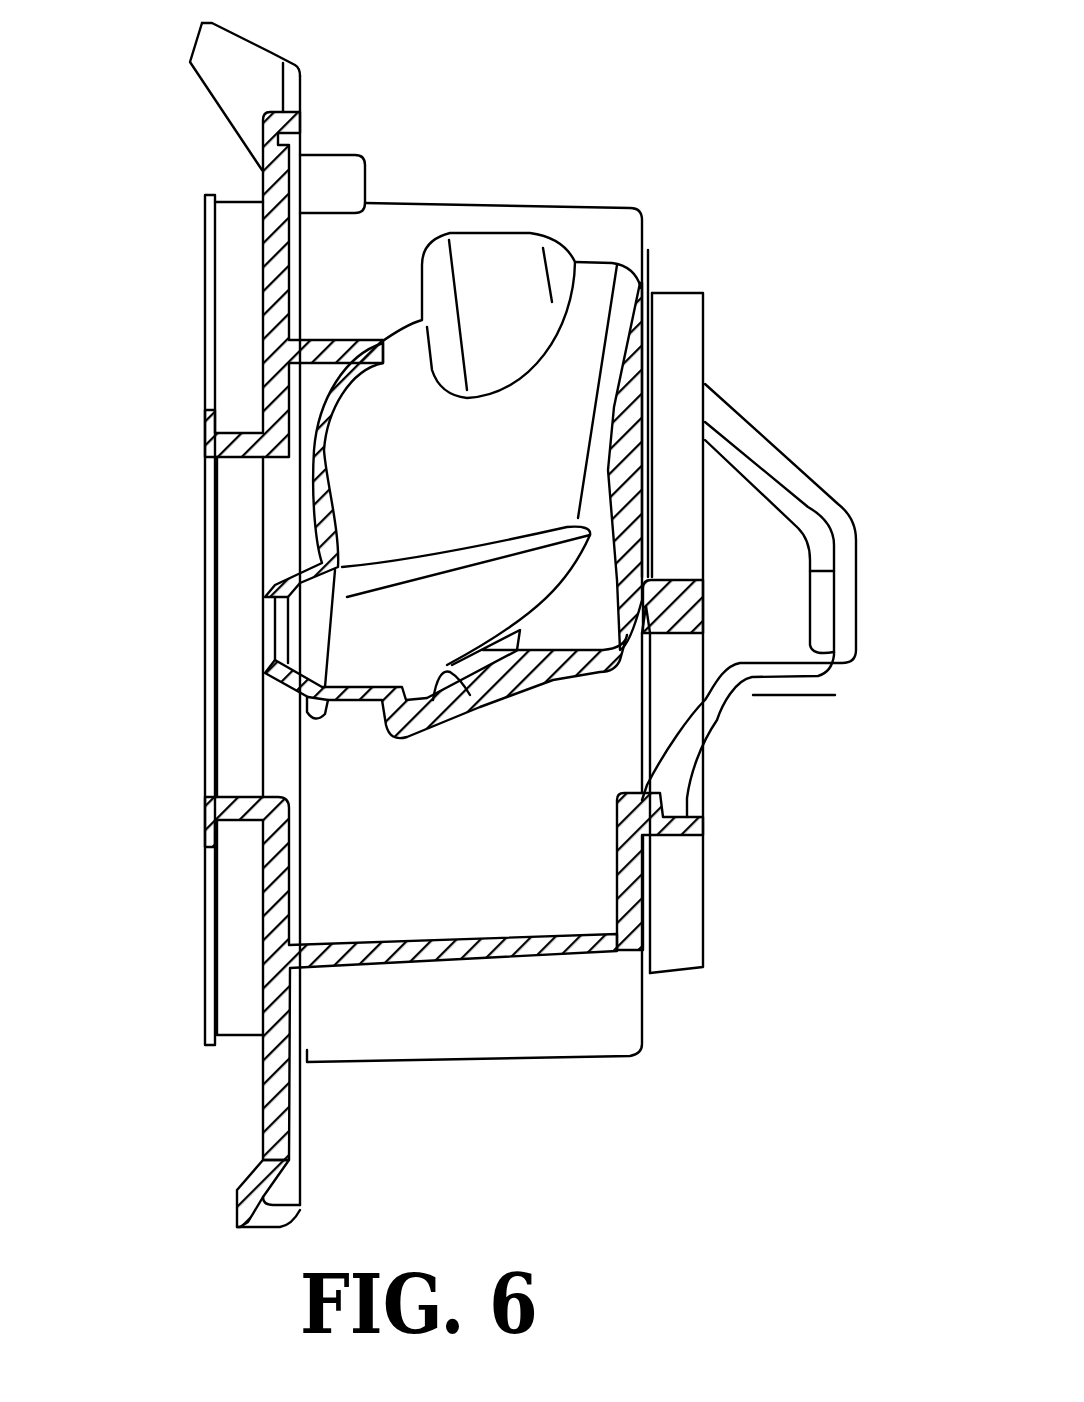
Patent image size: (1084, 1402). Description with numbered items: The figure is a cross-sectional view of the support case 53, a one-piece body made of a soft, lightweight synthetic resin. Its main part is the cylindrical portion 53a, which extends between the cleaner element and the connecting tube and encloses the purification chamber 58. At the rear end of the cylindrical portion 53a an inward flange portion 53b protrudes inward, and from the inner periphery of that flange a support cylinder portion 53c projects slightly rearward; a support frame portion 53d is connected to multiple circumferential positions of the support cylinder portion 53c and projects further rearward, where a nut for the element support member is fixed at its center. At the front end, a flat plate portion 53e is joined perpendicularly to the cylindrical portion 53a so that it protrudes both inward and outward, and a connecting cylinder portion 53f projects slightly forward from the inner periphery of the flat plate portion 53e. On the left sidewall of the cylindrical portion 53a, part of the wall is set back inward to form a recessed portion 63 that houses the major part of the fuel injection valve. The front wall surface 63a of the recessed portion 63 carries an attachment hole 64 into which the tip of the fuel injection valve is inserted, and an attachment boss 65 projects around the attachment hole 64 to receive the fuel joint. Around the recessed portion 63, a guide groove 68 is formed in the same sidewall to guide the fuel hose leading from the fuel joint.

The support case 53 is at (597, 192).
The cylindrical portion 53a is at (497, 1064).
The inward flange portion 53b is at (617, 863).
The support cylinder portion 53c is at (703, 827).
The support frame portion 53d is at (748, 683).
The flat plate portion 53e is at (262, 1062).
The connecting cylinder portion 53f is at (222, 797).
The purification chamber 58 is at (480, 836).
The recessed portion 63 is at (458, 678).
The front wall surface 63a is at (347, 571).
The attachment hole 64 is at (338, 565).
The attachment boss 65 is at (423, 713).
The guide groove 68 is at (493, 268).